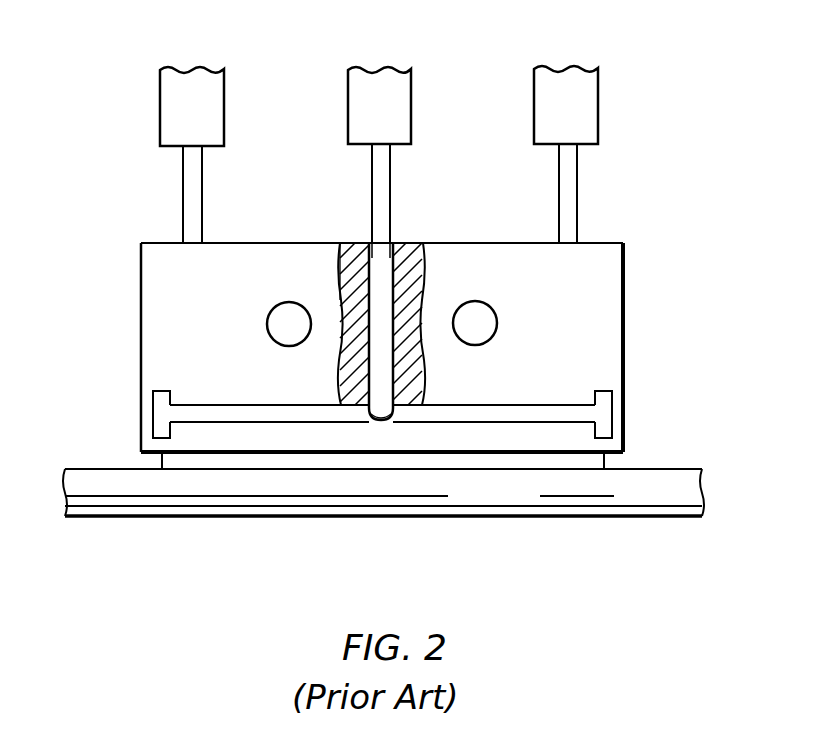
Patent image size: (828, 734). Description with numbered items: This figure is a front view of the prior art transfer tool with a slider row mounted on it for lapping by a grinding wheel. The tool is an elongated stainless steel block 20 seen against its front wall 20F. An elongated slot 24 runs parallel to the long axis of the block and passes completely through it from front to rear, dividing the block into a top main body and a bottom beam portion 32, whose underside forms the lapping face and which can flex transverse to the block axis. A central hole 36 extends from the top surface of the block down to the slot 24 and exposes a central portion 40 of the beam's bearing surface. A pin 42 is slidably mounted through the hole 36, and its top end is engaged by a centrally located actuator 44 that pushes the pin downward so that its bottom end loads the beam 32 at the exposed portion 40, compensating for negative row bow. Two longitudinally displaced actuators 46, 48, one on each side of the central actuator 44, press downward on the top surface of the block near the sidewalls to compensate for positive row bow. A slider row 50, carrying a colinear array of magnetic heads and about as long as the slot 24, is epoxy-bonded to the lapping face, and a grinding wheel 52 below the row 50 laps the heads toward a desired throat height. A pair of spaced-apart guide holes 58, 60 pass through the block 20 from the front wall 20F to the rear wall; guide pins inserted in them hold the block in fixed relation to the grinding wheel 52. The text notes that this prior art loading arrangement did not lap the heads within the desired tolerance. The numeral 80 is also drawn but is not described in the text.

The block 20 is at (300, 277).
The front wall 20F is at (227, 253).
The elongated slot 24 is at (303, 412).
The bottom beam portion 32 is at (470, 440).
The central hole 36 is at (391, 248).
The central exposed portion of the bearing surface 40 is at (372, 420).
The pin 42 is at (384, 307).
The central actuator 44 is at (398, 108).
The actuator 46 is at (212, 110).
The actuator 48 is at (586, 108).
The slider row 50 is at (542, 460).
The grinding wheel 52 is at (215, 488).
The guide hole 58 is at (277, 328).
The guide hole 60 is at (485, 327).
The block 80 is at (565, 277).